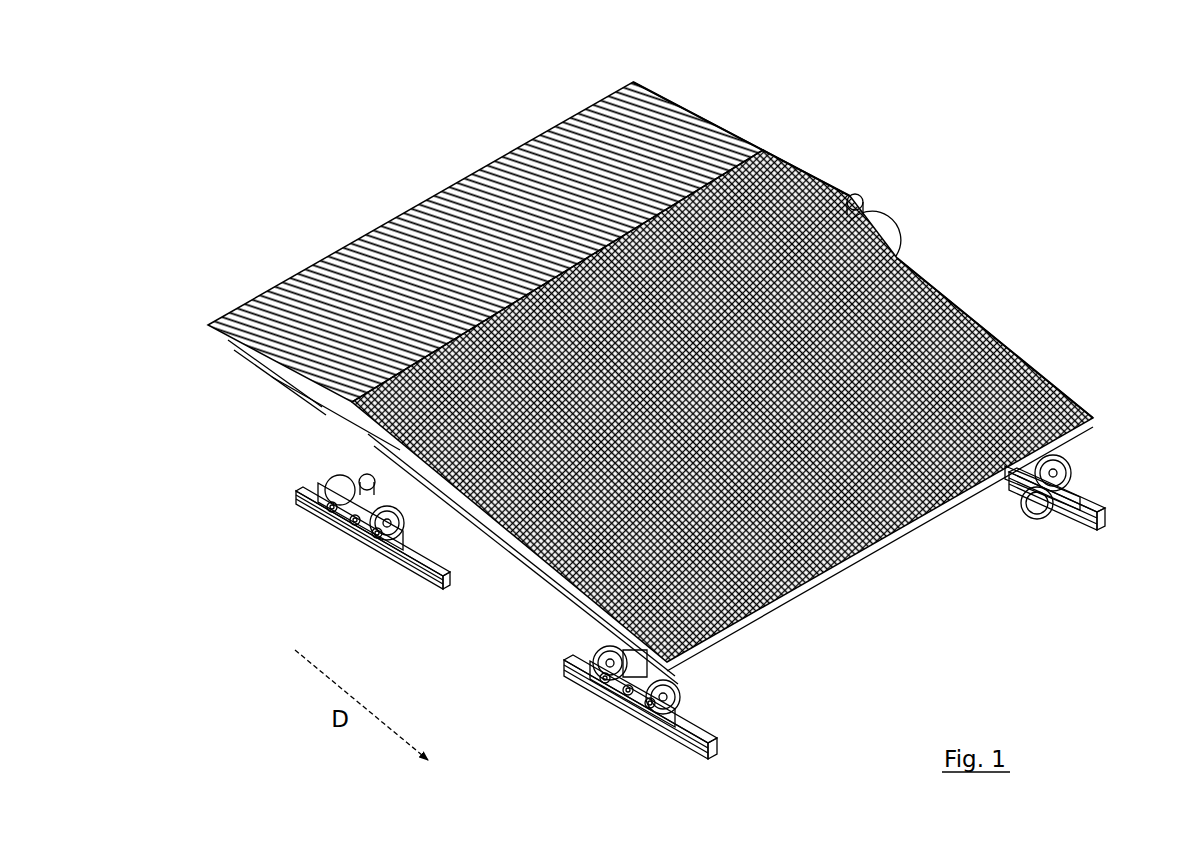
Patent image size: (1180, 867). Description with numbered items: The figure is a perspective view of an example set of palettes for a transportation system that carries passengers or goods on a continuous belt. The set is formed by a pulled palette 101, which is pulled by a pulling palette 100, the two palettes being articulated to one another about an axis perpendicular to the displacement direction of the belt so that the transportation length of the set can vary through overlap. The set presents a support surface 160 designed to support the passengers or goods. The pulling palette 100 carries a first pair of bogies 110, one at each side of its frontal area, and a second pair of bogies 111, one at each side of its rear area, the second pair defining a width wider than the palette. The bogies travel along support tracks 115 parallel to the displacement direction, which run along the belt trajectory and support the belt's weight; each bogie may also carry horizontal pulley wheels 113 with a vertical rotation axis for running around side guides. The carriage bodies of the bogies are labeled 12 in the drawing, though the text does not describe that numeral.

The pulling palette 100 is at (1008, 293).
The pulled palette 101 is at (697, 105).
The support surface 160 is at (737, 140).
The second pair of bogies 111 is at (893, 221).
The first pair of bogies 110 is at (1080, 458).
The horizontal pulley wheels 113 is at (417, 547).
The carriage 12 is at (360, 557).
The support tracks 115 is at (435, 575).